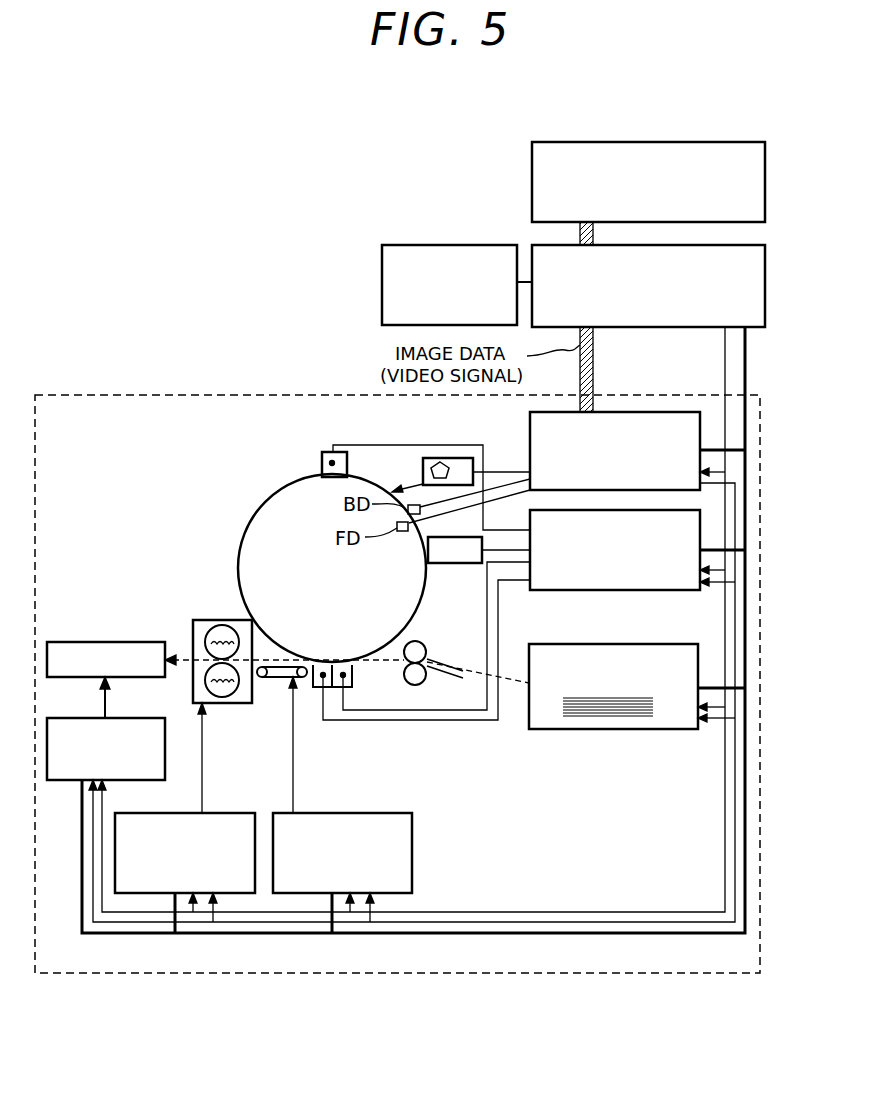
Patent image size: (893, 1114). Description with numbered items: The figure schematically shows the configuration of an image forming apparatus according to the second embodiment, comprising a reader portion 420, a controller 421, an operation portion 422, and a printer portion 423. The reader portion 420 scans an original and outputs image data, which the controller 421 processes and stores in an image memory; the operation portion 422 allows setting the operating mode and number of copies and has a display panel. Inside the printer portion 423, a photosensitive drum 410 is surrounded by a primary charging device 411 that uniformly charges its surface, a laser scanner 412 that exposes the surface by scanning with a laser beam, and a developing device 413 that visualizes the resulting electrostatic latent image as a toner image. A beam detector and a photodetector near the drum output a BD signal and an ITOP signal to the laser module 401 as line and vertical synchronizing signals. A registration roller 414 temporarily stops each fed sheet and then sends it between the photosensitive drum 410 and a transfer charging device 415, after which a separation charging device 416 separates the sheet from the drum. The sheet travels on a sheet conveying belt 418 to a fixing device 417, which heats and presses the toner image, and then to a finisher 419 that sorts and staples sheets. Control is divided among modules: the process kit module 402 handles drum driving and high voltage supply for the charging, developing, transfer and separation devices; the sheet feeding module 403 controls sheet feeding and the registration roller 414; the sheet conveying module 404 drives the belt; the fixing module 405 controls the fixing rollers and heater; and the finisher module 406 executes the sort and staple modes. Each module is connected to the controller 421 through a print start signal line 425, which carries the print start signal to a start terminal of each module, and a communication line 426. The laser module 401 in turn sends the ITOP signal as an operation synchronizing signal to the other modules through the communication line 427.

The laser module 401 is at (530, 424).
The process kit (Pkit) module 402 is at (564, 590).
The sheet feeding module 403 is at (565, 730).
The sheet conveying module 404 is at (383, 813).
The fixing module 405 is at (228, 813).
The finisher module 406 is at (72, 781).
The photosensitive drum 410 is at (263, 498).
The primary charging device 411 is at (330, 452).
The laser scanner 412 is at (423, 466).
The developing device 413 is at (453, 564).
The registration roller 414 is at (429, 647).
The transfer charging device 415 is at (355, 672).
The separation charging device 416 is at (305, 684).
The fixing device 417 is at (215, 620).
The sheet conveying belt 418 is at (276, 679).
The finisher 419 is at (72, 642).
The reader portion 420 is at (575, 142).
The controller 421 is at (765, 266).
The operation portion 422 is at (418, 245).
The printer portion 423 is at (80, 395).
The print start signal line 425 is at (725, 365).
The communication line 426 is at (745, 415).
The communication line 427 is at (735, 515).